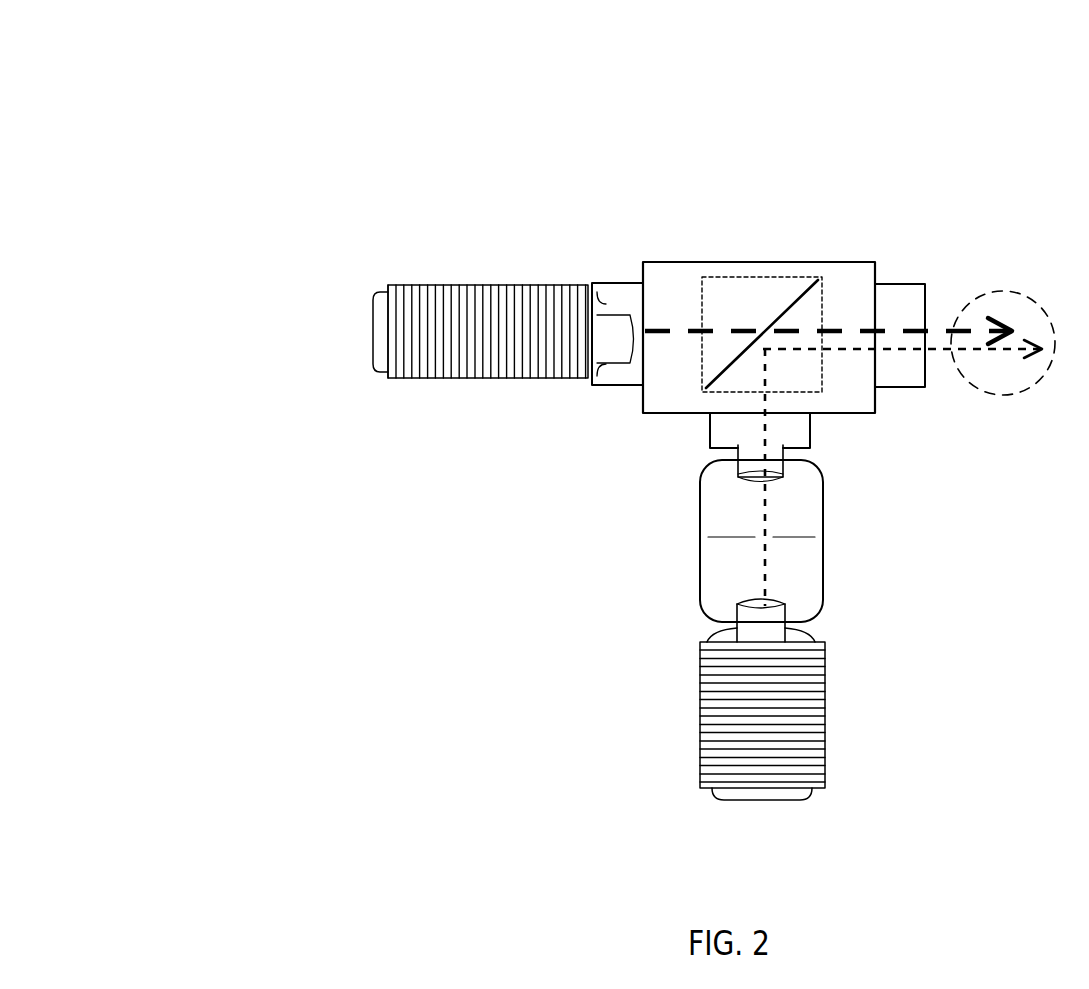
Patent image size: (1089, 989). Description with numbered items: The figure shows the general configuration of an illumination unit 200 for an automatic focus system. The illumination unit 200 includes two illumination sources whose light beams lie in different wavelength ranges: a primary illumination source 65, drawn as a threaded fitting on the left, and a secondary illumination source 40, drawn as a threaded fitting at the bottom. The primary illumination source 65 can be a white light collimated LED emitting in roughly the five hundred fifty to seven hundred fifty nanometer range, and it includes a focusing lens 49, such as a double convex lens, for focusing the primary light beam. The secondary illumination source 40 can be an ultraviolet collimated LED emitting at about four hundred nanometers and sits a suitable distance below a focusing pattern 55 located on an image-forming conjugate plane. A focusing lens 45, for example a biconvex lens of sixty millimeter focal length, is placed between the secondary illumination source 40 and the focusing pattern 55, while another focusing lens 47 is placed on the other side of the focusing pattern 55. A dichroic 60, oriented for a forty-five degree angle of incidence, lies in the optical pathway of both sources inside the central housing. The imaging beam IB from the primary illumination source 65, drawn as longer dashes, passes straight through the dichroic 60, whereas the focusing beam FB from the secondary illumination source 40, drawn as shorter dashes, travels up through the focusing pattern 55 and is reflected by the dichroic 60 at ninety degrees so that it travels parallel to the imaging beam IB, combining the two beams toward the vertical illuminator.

The illumination unit 200 is at (210, 273).
The primary illumination source 65 is at (515, 315).
The focusing lens 49 is at (628, 323).
The dichroic 60 is at (710, 357).
The imaging beam IB is at (692, 328).
The focusing beam FB is at (755, 548).
The focusing lens 47 is at (780, 472).
The focusing pattern 55 is at (790, 538).
The focusing lens 45 is at (770, 602).
The secondary illumination source 40 is at (795, 717).